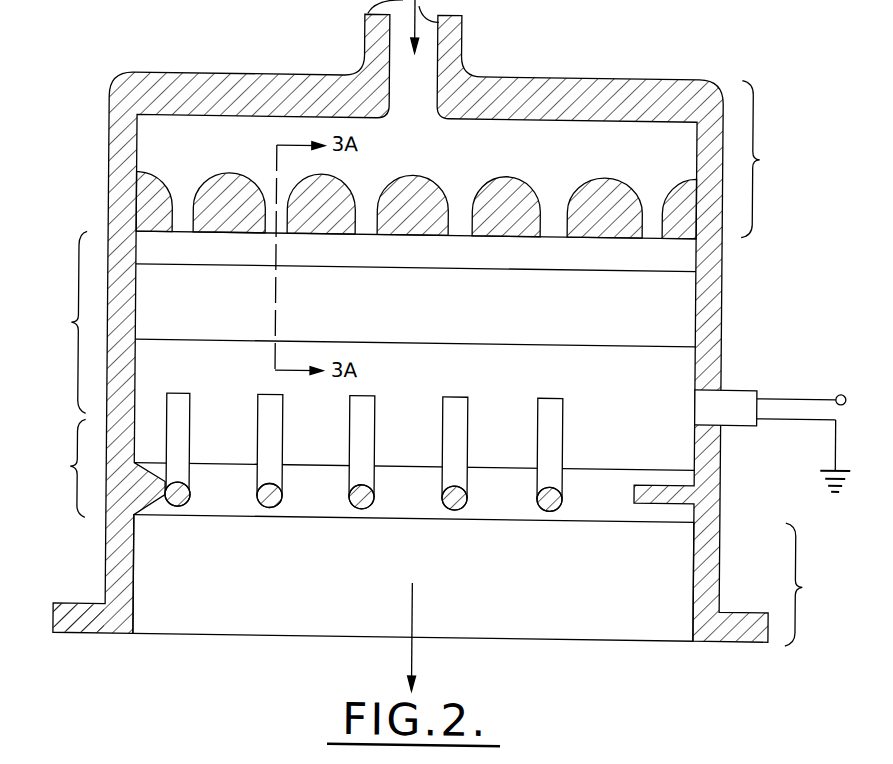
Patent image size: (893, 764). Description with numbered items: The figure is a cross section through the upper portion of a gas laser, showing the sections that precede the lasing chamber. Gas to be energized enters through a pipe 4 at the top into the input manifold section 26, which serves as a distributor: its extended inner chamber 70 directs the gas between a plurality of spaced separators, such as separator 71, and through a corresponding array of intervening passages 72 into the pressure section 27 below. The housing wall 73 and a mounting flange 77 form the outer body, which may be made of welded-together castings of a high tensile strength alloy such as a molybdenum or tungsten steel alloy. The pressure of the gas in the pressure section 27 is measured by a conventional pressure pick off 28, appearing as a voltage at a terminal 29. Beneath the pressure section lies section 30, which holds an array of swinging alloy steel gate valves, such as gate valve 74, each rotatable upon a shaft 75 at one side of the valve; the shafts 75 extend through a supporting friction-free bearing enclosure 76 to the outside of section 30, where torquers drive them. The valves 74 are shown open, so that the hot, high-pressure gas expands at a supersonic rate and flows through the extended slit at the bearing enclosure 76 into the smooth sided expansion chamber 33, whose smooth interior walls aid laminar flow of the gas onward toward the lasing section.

The pipe 4 is at (460, 46).
The input manifold section 26 is at (769, 160).
The pressure section 27 is at (57, 322).
The pressure pick off 28 is at (746, 387).
The terminal 29 is at (841, 389).
The section 30 is at (57, 468).
The expansion chamber 33 is at (810, 585).
The inner chamber 70 is at (612, 153).
The separator 71 is at (410, 180).
The passage 72 is at (458, 234).
The housing wall 73 is at (413, 326).
The gate valve 74 is at (190, 419).
The shaft 75 is at (279, 507).
The bearing enclosure 76 is at (504, 512).
The mounting flange 77 is at (64, 608).